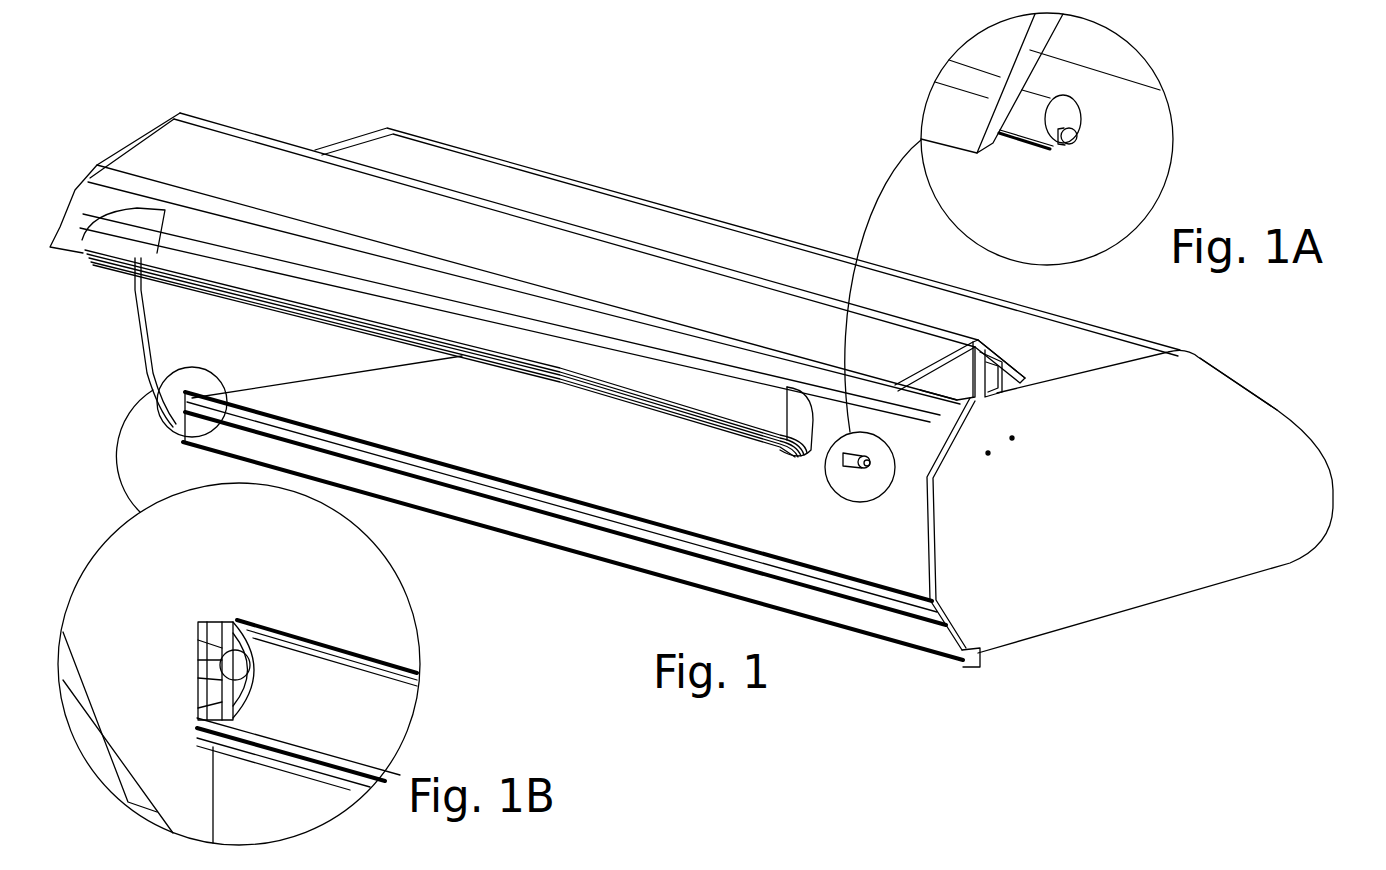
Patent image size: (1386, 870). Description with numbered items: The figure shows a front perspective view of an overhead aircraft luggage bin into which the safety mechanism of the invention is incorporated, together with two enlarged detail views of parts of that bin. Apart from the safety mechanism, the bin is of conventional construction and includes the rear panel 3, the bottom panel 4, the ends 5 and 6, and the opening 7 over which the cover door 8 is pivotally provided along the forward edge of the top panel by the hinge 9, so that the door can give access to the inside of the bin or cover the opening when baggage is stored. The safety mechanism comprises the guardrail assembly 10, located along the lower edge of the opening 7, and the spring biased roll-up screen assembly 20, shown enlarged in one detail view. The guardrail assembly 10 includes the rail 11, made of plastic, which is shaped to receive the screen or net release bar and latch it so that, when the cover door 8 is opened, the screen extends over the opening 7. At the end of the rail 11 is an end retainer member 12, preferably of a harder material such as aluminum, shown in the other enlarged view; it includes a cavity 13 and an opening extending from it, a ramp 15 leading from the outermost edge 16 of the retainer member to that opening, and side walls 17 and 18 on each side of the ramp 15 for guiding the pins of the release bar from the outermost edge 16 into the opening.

In FIG. 1, the rear panel 3 is at (1225, 372).
In FIG. 1, the bottom panel 4 is at (481, 437).
In FIG. 1, the end 5 is at (1232, 448).
In FIG. 1, the end 6 is at (167, 320).
In FIG. 1, the opening 7 is at (905, 548).
In FIG. 1, the cover door 8 is at (172, 147).
In FIG. 1, the hinge 9 is at (1003, 388).
In FIG. 1, the guardrail assembly 10 is at (493, 505).
In FIG. 1, the rail 11 is at (503, 480).
In FIG. 1B, the rail 11 is at (307, 633).
In FIG. 1B, the end retainer member 12 is at (218, 630).
In FIG. 1B, the cavity 13 is at (252, 677).
In FIG. 1B, the ramp 15 is at (203, 660).
In FIG. 1B, the outermost edge 16 is at (228, 677).
In FIG. 1B, the side wall 17 is at (200, 708).
In FIG. 1B, the side wall 18 is at (205, 657).
In FIG. 1, the spring biased roll-up screen assembly 20 is at (928, 495).
In FIG. 1A, the spring biased roll-up screen assembly 20 is at (1085, 118).